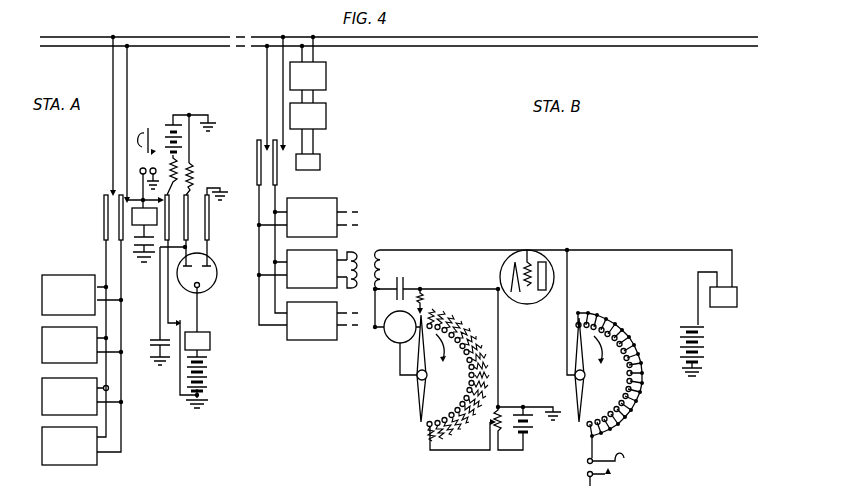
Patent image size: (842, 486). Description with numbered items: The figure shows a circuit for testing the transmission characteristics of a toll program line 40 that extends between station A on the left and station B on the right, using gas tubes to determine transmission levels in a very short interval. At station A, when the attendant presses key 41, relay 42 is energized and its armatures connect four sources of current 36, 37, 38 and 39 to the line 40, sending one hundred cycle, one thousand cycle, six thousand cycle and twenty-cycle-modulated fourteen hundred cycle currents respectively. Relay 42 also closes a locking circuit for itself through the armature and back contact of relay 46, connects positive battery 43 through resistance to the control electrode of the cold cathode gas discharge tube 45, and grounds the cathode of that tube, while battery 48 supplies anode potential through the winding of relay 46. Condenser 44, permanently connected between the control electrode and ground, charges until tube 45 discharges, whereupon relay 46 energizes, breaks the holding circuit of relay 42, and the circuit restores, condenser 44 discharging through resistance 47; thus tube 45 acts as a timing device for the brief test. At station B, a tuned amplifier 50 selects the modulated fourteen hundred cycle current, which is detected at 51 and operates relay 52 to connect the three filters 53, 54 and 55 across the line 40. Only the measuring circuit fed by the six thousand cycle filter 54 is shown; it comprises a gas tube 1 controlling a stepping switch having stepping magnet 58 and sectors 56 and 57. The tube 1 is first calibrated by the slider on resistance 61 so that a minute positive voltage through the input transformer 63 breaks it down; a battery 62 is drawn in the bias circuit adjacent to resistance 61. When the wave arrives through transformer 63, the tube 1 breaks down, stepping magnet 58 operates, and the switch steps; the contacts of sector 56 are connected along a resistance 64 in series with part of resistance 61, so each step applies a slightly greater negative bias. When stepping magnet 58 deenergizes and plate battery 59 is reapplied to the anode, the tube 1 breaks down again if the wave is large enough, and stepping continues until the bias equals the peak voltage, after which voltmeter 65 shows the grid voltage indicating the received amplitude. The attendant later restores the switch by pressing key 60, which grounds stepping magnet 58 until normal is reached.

The gas tube 1 is at (527, 304).
The source of current 36 is at (42, 439).
The source of current 37 is at (42, 340).
The source of current 38 is at (42, 392).
The source of current 39 is at (58, 275).
The toll program line 40 is at (432, 30).
The key 41 is at (148, 155).
The relay 42 is at (132, 218).
The positive battery 43 is at (186, 142).
The condenser 44 is at (150, 344).
The cold cathode gas discharge tube 45 is at (204, 283).
The relay 46 is at (204, 340).
The resistance 47 is at (195, 175).
The battery 48 is at (208, 377).
The tuned amplifier 50 is at (327, 76).
The detector 51 is at (327, 116).
The relay 52 is at (321, 162).
The filter 53 is at (337, 205).
The 6000 cycle filter 54 is at (337, 250).
The filter 55 is at (326, 340).
The switch sector 56 is at (456, 369).
The switch sector 57 is at (609, 374).
The stepping magnet 58 is at (725, 307).
The plate battery 59 is at (680, 333).
The key 60 is at (616, 468).
The resistance 61 is at (500, 416).
The battery 62 is at (540, 420).
The input transformer 63 is at (372, 292).
The resistance 64 is at (466, 330).
The voltmeter 65 is at (400, 343).